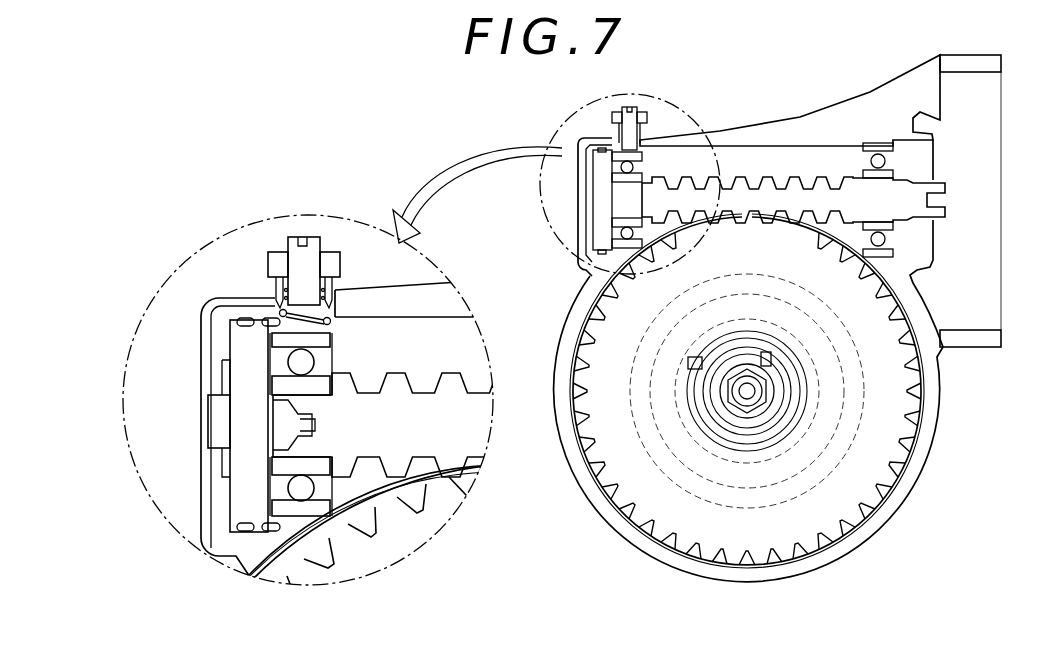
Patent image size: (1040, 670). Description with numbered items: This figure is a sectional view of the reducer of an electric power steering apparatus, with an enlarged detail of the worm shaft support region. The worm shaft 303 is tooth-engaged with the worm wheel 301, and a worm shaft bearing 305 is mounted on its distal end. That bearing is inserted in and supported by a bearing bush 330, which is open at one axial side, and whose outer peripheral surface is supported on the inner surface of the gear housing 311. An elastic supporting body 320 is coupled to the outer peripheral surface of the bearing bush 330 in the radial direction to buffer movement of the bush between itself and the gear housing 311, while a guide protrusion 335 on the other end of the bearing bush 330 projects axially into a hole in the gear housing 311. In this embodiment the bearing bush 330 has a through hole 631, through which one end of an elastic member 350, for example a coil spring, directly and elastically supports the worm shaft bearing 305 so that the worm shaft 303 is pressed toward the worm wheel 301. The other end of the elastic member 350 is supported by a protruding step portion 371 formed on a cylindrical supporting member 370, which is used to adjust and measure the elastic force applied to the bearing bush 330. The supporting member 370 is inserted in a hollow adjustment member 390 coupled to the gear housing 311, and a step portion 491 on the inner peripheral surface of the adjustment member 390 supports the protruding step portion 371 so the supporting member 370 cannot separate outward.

The worm wheel 301 is at (400, 533).
The worm shaft 303 is at (437, 440).
The worm shaft bearing 305 is at (316, 545).
The gear housing 311 is at (207, 315).
The elastic supporting body 320 is at (246, 534).
The bearing bush 330 is at (248, 498).
The guide protrusion 335 is at (215, 416).
The elastic member 350 is at (327, 307).
The supporting member 370 is at (312, 240).
The protruding step portion 371 is at (270, 281).
The adjustment member 390 is at (276, 252).
The step portion 491 is at (324, 263).
The through hole 631 is at (340, 303).